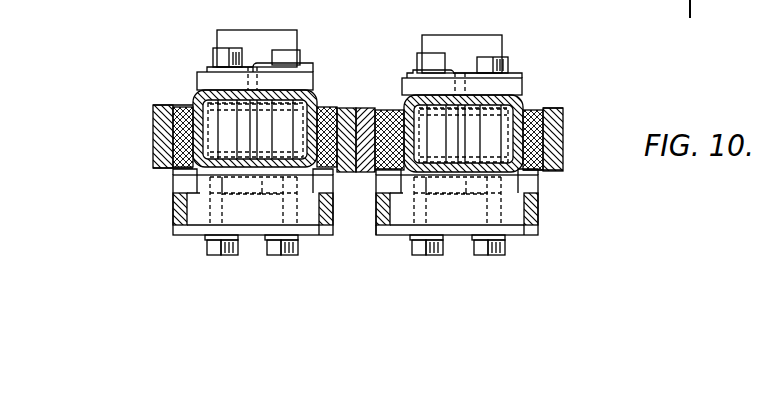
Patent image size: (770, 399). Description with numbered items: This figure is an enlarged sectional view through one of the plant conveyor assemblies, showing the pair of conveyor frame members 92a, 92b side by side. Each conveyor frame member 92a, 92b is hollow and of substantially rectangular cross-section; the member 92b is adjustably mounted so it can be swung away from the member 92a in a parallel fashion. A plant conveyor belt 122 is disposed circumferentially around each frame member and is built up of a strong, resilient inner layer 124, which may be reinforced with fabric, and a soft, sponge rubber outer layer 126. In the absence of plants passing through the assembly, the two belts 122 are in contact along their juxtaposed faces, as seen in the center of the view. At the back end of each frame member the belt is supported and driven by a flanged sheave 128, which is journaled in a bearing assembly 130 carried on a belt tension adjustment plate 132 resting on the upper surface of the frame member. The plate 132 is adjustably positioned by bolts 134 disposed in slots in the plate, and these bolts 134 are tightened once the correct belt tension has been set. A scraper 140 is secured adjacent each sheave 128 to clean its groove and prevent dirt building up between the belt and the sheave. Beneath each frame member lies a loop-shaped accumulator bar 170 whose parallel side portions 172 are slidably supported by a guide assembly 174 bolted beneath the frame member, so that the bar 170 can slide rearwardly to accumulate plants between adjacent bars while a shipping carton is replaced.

The bearing assembly 130 is at (267, 34).
The belt tension adjustment plate 132 is at (205, 72).
The bolts 134 is at (290, 57).
The conveyor frame member 92a is at (200, 93).
The conveyor frame member 92b is at (514, 103).
The plant conveyor belt 122 is at (153, 147).
The inner layer 124 is at (155, 108).
The outer layer 126 is at (153, 127).
The flanged sheave 128 is at (390, 108).
The accumulator bar 170 is at (172, 212).
The scraper 140 is at (243, 140).
The guide assembly 174 is at (252, 225).
The side portions 172 is at (375, 223).